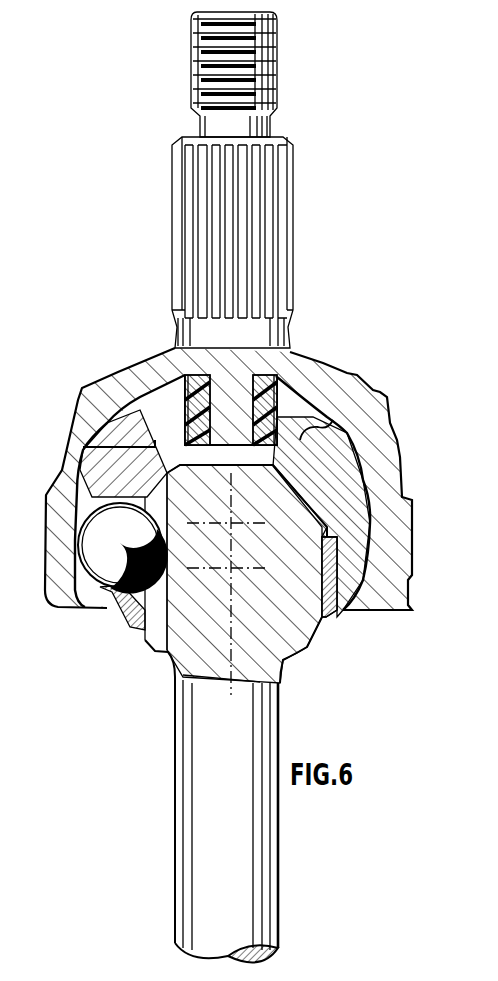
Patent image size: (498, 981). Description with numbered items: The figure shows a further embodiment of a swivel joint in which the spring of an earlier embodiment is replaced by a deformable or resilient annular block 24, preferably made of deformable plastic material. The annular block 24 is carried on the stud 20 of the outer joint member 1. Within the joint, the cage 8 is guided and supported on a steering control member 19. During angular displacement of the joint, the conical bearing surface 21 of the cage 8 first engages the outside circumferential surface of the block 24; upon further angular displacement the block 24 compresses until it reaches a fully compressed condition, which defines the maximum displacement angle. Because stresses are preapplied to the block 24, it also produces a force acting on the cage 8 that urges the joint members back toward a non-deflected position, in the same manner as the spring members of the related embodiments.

The outer joint member 1 is at (373, 448).
The cage 8 is at (353, 510).
The steering control member 19 is at (330, 577).
The stud 20 is at (238, 397).
The conical bearing surface 21 is at (313, 433).
The annular block 24 is at (265, 402).